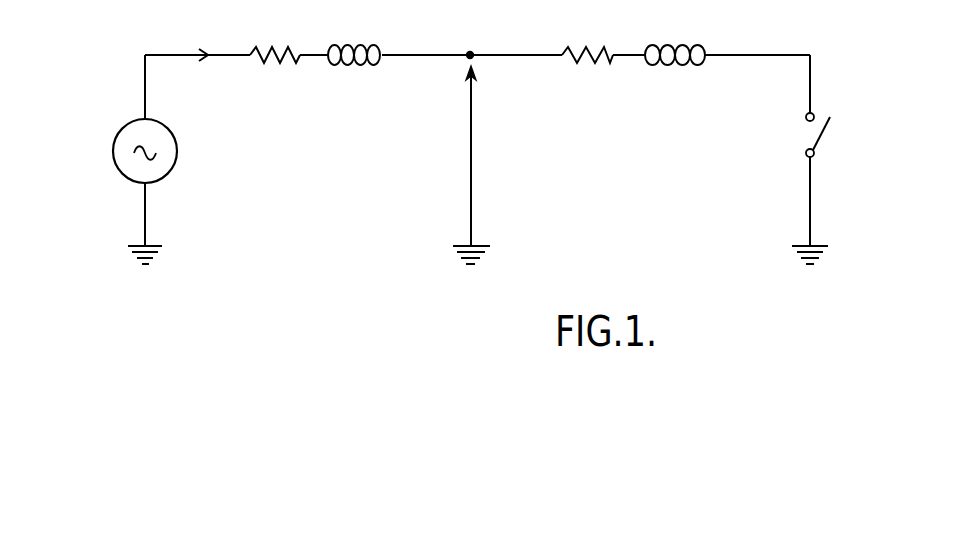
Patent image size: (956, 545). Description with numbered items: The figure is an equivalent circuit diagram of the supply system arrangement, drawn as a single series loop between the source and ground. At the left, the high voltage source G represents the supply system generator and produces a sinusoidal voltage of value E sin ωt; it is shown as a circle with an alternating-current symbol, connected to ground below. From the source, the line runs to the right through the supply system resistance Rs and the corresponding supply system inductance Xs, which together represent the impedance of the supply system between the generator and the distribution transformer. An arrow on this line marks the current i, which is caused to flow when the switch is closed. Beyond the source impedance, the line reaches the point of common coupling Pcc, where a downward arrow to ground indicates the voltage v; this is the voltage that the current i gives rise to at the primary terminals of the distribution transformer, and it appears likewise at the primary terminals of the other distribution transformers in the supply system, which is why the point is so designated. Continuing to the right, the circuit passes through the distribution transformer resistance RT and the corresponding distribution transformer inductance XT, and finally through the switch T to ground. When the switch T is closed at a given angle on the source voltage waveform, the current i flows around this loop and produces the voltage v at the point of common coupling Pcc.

The high voltage source G is at (186, 159).
The current i is at (203, 38).
The supply system resistance Rs is at (275, 37).
The supply system inductance Xs is at (354, 38).
The point of common coupling Pcc is at (461, 42).
The voltage at the primary terminals v is at (476, 165).
The distribution transformer resistance RT is at (587, 36).
The distribution transformer inductance XT is at (675, 37).
The switch T is at (819, 159).